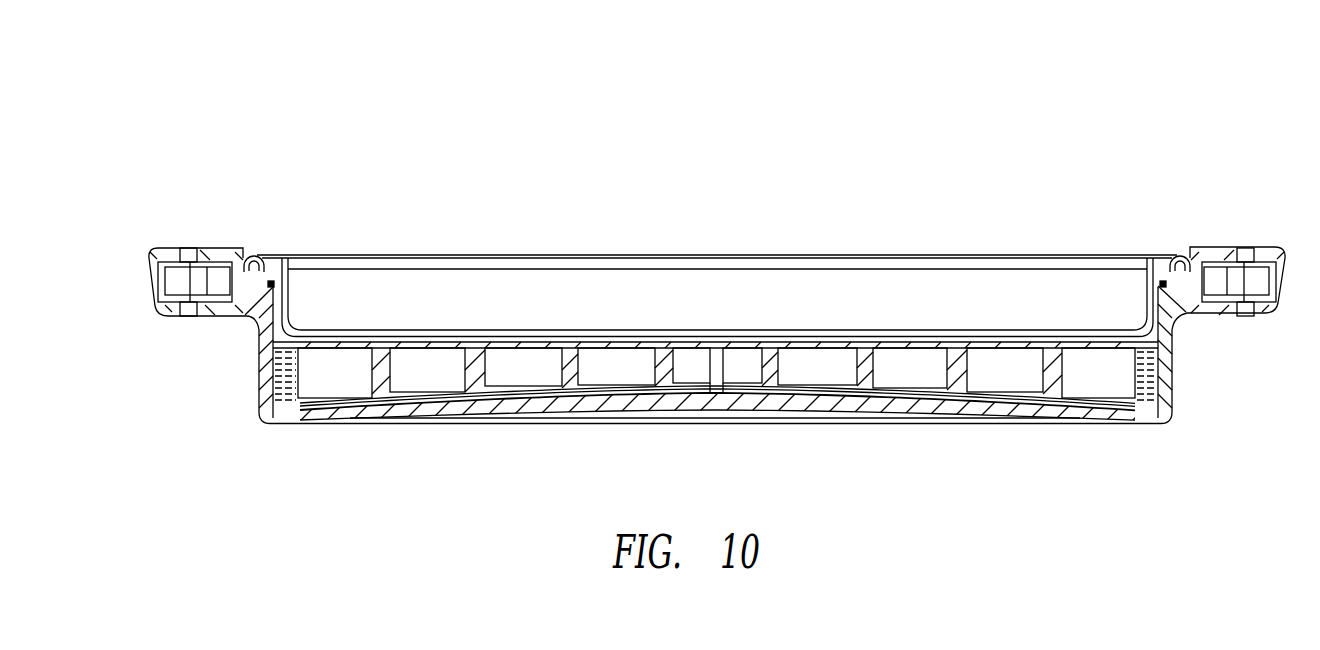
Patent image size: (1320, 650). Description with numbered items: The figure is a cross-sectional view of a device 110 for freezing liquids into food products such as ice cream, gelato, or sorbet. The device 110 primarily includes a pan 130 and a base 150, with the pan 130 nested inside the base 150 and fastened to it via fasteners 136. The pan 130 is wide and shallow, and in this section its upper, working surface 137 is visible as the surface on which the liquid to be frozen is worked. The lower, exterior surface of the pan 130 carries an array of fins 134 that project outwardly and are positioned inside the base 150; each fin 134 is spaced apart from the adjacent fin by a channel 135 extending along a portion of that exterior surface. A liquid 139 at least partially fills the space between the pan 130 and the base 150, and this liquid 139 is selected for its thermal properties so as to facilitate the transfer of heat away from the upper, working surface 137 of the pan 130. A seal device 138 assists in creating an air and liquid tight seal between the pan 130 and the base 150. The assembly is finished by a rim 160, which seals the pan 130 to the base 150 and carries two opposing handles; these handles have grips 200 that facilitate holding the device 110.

The device 110 is at (178, 108).
The pan 130 is at (272, 261).
The fins 134 is at (383, 387).
The channel 135 is at (1099, 382).
The fasteners 136 is at (258, 255).
The upper, working surface 137 is at (534, 330).
The seal device 138 is at (1158, 283).
The liquid 139 is at (1153, 367).
The base 150 is at (263, 400).
The rim 160 is at (152, 277).
The grips 200 is at (186, 250).